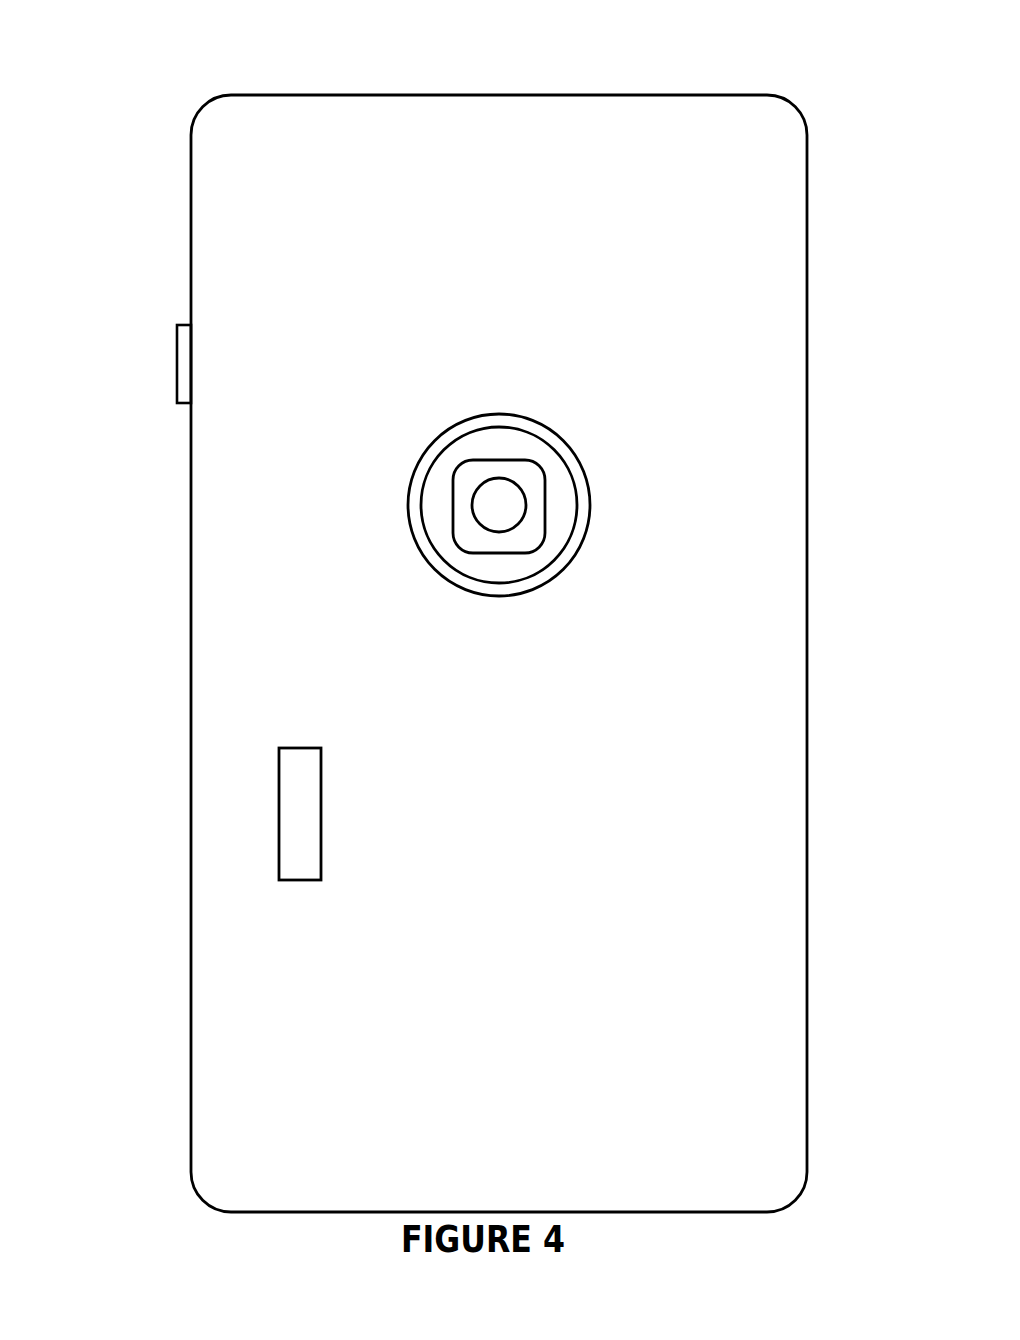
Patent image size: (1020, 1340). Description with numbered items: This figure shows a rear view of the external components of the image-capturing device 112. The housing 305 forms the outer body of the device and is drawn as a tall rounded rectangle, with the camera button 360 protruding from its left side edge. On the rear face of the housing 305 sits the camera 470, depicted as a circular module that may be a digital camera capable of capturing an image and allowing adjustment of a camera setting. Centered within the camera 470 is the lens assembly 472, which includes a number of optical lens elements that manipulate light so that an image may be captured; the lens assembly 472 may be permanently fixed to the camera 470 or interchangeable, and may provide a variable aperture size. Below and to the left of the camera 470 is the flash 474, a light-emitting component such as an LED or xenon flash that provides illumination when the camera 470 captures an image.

The image-capturing device 112 is at (165, 32).
The housing 305 is at (780, 791).
The camera button 360 is at (177, 370).
The camera 470 is at (555, 539).
The lens assembly 472 is at (527, 500).
The flash 474 is at (279, 815).